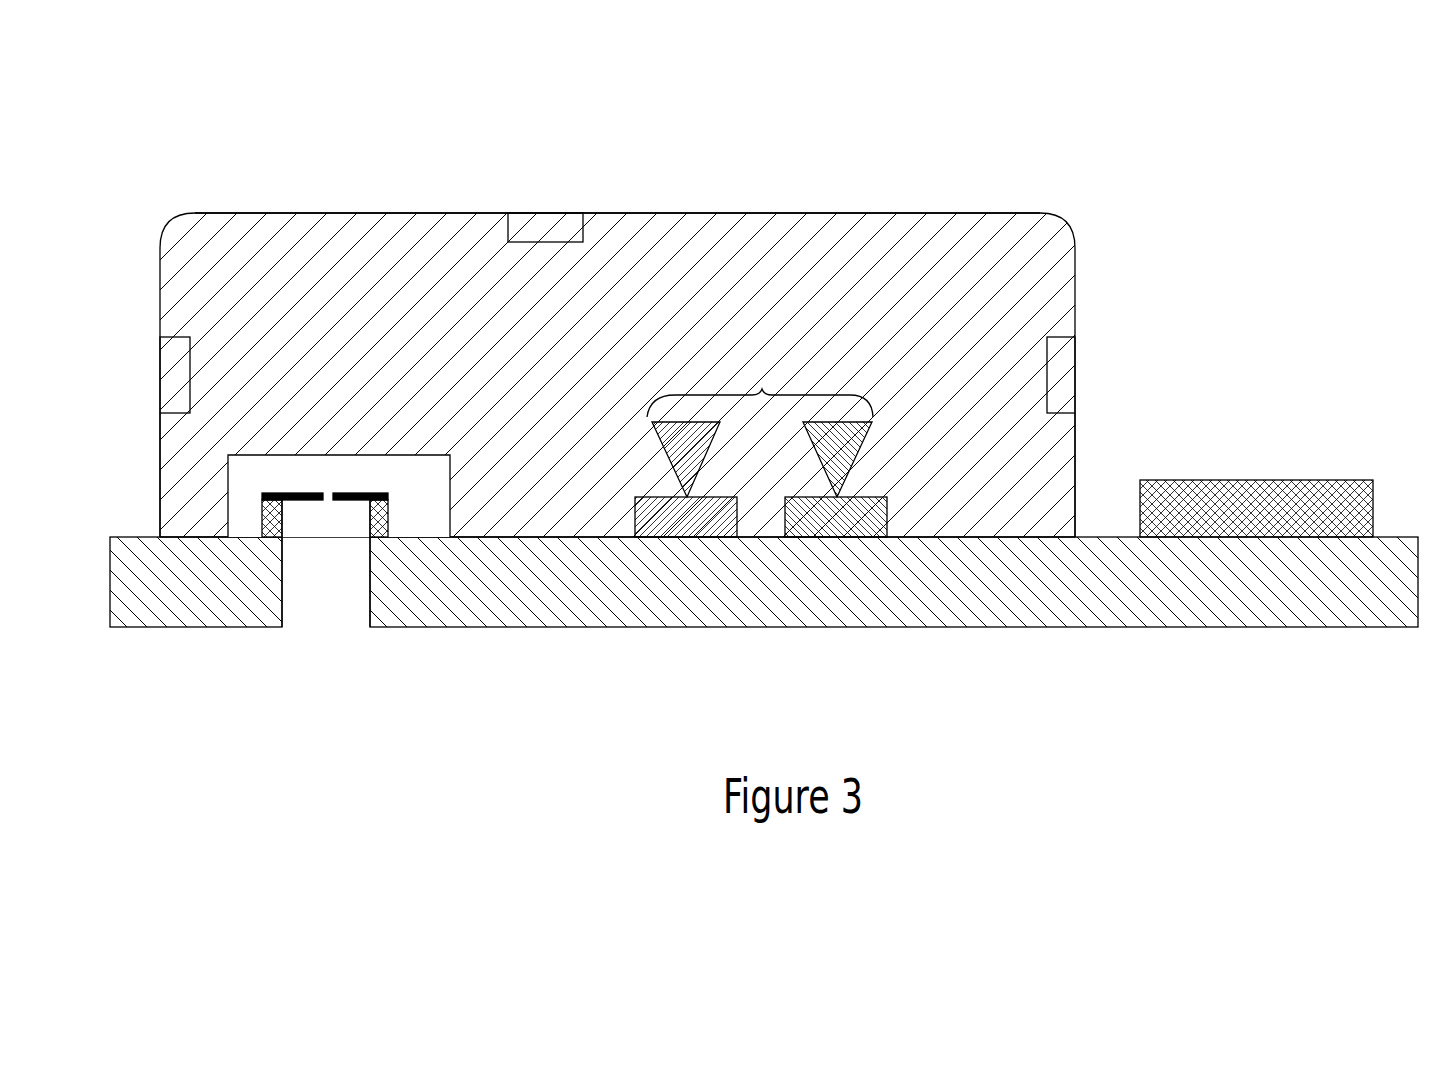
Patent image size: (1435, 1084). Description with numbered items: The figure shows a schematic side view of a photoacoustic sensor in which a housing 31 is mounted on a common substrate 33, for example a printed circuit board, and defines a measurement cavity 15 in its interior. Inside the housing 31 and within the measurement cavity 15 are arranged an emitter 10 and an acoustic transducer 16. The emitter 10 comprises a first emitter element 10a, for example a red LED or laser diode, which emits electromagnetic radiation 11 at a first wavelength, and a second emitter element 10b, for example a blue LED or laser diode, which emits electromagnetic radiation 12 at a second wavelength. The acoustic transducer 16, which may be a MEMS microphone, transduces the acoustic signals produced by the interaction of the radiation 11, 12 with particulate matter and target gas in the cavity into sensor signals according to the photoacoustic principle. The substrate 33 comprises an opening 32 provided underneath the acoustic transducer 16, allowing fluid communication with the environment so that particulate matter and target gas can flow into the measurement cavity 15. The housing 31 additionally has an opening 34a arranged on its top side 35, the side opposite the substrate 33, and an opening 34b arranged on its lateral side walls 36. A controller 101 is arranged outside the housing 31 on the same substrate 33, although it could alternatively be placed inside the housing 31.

The emitter 10 is at (762, 519).
The first emitter element 10a is at (837, 525).
The second emitter element 10b is at (683, 525).
The electromagnetic radiation at the first wavelength 11 is at (858, 463).
The electromagnetic radiation at the second wavelength 12 is at (657, 465).
The measurement cavity 15 is at (587, 350).
The acoustic transducer 16 is at (243, 505).
The housing 31 is at (755, 213).
The opening 32 is at (322, 615).
The substrate 33 is at (1097, 627).
The opening on the top side 34a is at (545, 208).
The opening on the lateral side wall 34b is at (148, 372).
The top side 35 is at (688, 133).
The lateral side wall 36 is at (148, 445).
The controller 101 is at (1253, 480).